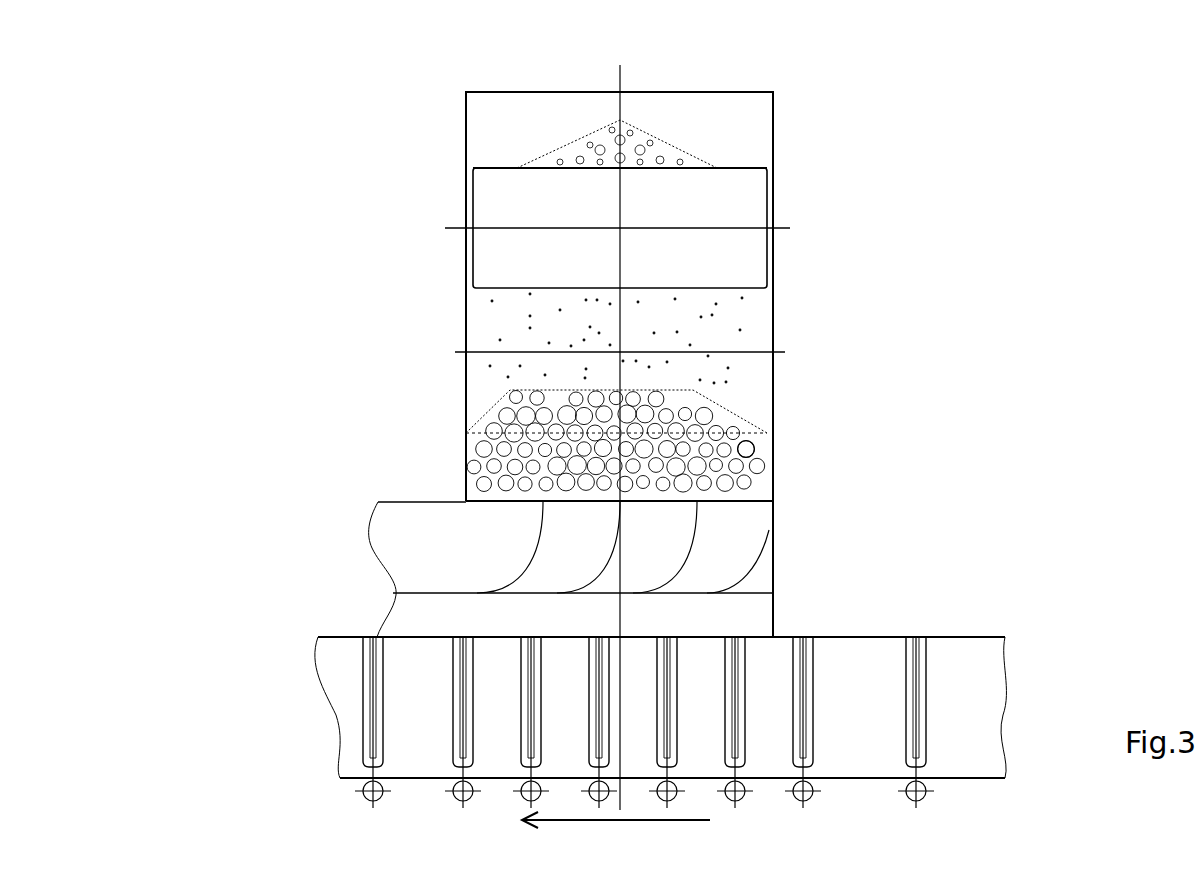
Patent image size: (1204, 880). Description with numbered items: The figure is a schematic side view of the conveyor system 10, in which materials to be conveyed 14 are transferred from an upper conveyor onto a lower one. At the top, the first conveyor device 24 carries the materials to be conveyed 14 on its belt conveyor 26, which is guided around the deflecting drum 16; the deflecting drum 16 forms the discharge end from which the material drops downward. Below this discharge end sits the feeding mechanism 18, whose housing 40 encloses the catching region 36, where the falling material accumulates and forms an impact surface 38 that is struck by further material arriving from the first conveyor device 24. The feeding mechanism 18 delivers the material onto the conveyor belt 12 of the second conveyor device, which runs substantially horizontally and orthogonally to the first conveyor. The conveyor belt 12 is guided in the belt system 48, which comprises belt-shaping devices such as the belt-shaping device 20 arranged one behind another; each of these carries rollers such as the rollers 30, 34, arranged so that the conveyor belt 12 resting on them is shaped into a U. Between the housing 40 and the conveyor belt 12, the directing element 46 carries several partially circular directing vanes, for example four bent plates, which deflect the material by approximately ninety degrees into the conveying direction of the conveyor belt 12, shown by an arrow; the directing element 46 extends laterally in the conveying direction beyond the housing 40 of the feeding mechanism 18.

The conveyor system 10 is at (265, 138).
The conveyor belt 12 is at (352, 730).
The materials to be conveyed 14 is at (642, 137).
The deflecting drum 16 is at (677, 195).
The feeding mechanism 18 is at (462, 382).
The belt-shaping device 20 is at (352, 630).
The first conveyor device 24 is at (455, 210).
The belt conveyor 26 is at (495, 165).
The roller 30 is at (368, 695).
The roller 34 is at (365, 790).
The catching region 36 is at (750, 465).
The impact surface 38 is at (672, 446).
The housing 40 is at (462, 465).
The directing element 46 is at (725, 547).
The belt system 48 is at (1037, 659).